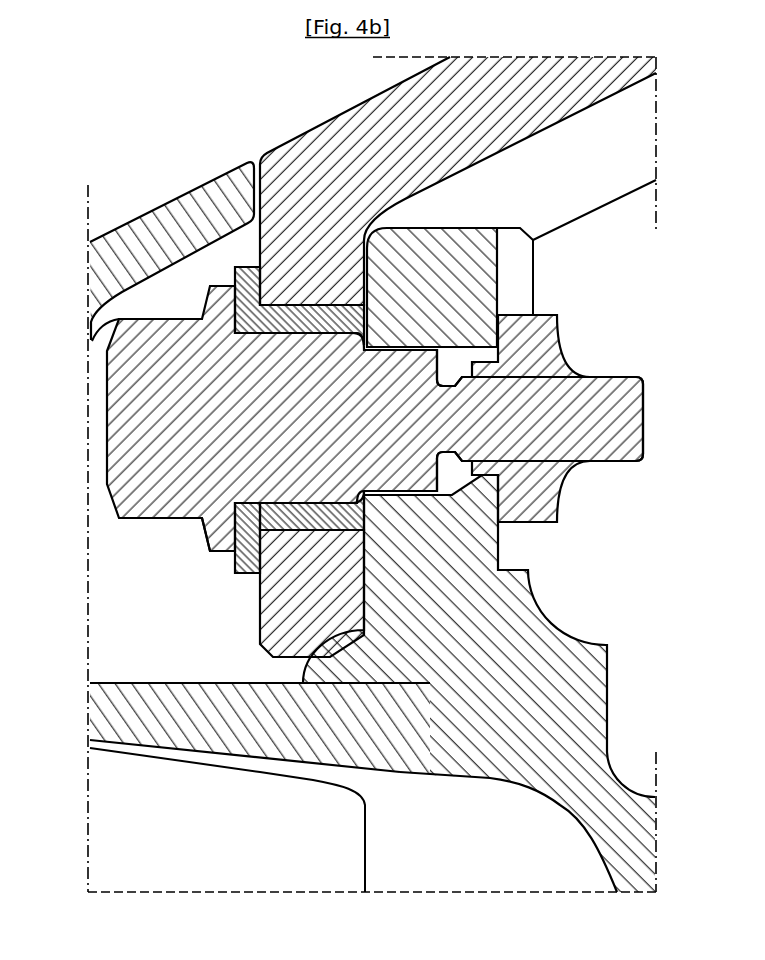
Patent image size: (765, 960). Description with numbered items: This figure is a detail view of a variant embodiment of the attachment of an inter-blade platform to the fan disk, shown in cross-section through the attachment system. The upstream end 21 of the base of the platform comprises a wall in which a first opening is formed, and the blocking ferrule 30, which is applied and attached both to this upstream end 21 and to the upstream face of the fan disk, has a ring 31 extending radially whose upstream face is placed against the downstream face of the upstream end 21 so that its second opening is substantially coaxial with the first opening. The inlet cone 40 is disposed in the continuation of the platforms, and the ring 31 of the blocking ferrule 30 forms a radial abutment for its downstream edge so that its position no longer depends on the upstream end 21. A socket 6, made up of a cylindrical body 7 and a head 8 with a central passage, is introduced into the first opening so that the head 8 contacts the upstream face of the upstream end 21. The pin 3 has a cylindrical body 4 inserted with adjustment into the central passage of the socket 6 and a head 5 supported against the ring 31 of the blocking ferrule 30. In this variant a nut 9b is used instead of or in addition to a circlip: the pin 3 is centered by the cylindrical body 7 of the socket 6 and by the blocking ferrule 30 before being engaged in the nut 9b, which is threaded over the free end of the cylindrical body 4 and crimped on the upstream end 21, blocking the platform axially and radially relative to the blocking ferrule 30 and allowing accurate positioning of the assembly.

The pin 3 is at (125, 417).
The cylindrical body 4 is at (358, 423).
The head 5 is at (220, 530).
The socket 6 is at (298, 321).
The cylindrical body 7 is at (300, 517).
The head 8 is at (243, 558).
The nut 9b is at (530, 493).
The upstream end 21 is at (378, 138).
The blocking ferrule 30 is at (572, 763).
The ring 31 is at (433, 290).
The inlet cone 40 is at (177, 228).